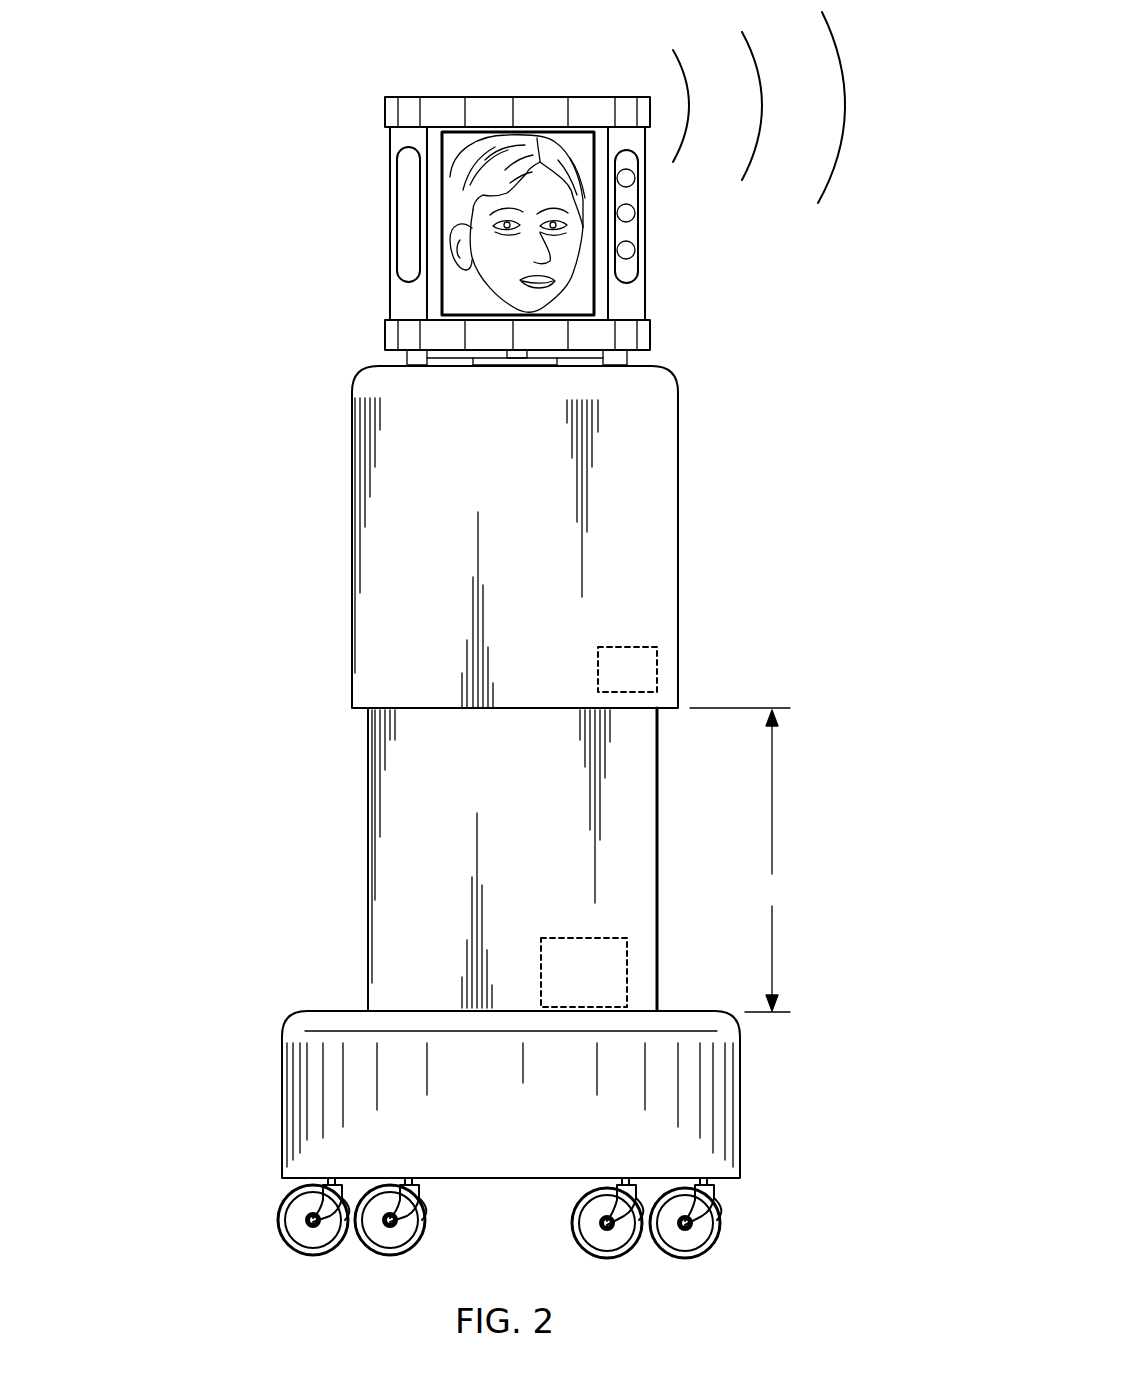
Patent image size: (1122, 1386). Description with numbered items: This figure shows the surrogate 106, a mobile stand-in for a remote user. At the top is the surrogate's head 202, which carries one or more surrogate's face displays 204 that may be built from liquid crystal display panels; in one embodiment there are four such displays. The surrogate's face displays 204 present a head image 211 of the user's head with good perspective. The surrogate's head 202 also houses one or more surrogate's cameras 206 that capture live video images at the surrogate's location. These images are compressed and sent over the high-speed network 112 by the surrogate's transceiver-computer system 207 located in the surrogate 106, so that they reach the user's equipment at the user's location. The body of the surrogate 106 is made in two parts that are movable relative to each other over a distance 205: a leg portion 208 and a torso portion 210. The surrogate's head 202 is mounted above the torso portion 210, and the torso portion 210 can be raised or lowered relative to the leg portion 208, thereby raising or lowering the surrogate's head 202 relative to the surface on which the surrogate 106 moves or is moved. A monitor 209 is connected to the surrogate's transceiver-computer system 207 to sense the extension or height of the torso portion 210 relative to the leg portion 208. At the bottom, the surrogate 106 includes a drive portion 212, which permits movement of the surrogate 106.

The surrogate 106 is at (244, 556).
The high-speed network 112 is at (672, 70).
The surrogate's head 202 is at (518, 231).
The surrogate's face displays 204 is at (437, 219).
The distance 205 is at (741, 860).
The surrogate's cameras 206 is at (637, 213).
The surrogate's transceiver-computer system 207 is at (584, 972).
The leg portion 208 is at (459, 859).
The monitor 209 is at (627, 669).
The torso portion 210 is at (459, 537).
The head image 211 is at (498, 252).
The drive portion 212 is at (283, 1108).